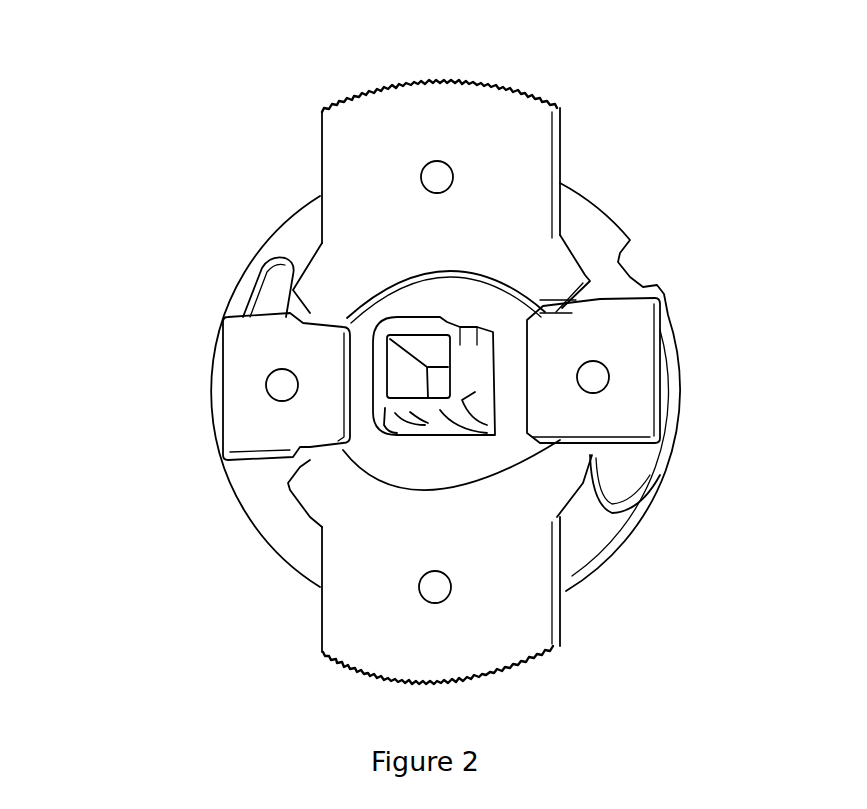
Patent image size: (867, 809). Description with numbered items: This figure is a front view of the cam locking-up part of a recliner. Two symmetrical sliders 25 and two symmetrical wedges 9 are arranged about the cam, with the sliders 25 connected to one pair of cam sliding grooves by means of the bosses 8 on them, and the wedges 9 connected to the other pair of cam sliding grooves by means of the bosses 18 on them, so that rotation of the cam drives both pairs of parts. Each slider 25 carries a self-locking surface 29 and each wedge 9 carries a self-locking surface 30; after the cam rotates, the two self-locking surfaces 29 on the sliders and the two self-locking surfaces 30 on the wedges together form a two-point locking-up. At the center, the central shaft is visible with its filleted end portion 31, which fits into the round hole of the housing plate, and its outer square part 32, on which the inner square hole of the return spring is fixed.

The boss 8 is at (447, 168).
The slider 25 is at (510, 203).
The self-locking surface 29 is at (335, 305).
The self-locking surface 30 is at (330, 430).
The wedge 9 is at (615, 325).
The boss 18 is at (605, 381).
The filleted end portion 31 is at (470, 397).
The outer square part 32 is at (423, 427).